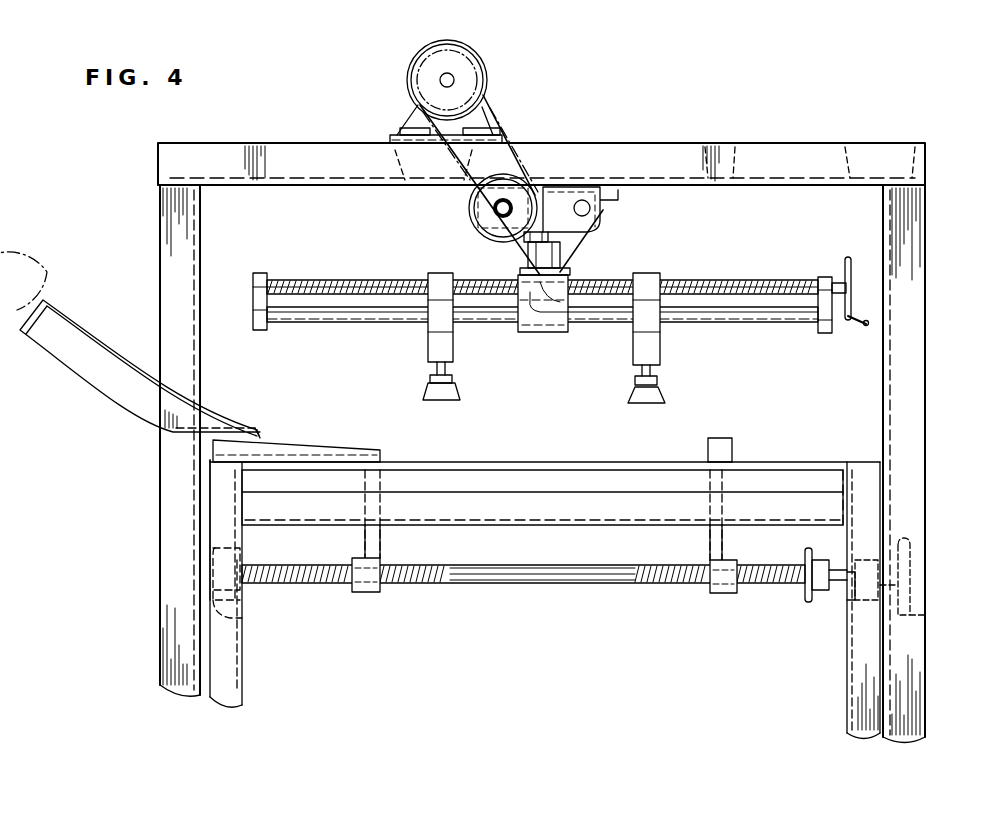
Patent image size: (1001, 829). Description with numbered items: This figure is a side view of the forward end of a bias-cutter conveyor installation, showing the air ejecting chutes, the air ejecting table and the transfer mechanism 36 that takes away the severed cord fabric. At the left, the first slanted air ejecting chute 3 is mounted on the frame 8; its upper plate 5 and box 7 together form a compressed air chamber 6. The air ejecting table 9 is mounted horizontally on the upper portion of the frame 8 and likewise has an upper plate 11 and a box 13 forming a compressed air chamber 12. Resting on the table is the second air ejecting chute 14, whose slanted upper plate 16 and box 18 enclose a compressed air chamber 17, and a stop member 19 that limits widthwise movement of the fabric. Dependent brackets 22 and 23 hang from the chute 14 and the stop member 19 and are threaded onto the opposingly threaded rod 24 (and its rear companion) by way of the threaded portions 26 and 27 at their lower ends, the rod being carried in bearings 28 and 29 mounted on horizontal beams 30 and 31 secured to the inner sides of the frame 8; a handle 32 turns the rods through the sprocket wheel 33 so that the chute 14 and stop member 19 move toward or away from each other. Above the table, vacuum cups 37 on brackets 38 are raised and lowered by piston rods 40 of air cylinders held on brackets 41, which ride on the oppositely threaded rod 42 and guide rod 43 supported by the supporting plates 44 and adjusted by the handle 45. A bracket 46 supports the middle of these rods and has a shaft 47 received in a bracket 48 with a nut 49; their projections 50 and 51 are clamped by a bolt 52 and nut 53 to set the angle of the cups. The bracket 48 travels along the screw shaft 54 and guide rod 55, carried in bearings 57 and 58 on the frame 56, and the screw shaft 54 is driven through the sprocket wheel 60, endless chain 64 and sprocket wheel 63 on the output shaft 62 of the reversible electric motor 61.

The first slanted air ejecting chute 3 is at (92, 392).
The upper plate 5 is at (92, 335).
The compressed air chamber 6 is at (72, 365).
The box 7 is at (28, 340).
The frame 8 is at (235, 684).
The air ejecting table 9 is at (792, 460).
The upper plate 11 is at (836, 462).
The compressed air chamber 12 is at (525, 525).
The box 13 is at (590, 525).
The second air ejecting chute 14 is at (308, 440).
The upper plate 16 is at (375, 448).
The compressed air chamber 17 is at (268, 440).
The box 18 is at (213, 452).
The stop member 19 is at (716, 438).
The dependent bracket 22 is at (380, 548).
The dependent bracket 23 is at (710, 548).
The threaded rod 24 is at (520, 584).
The left traveling nut 26 is at (367, 592).
The right traveling nut 27 is at (722, 593).
The bearings 28 is at (228, 548).
The bearings 29 is at (850, 585).
The horizontal beam 30 is at (240, 612).
The horizontal beam 31 is at (866, 600).
The handle 32 is at (912, 548).
The sprocket wheel 33 is at (806, 562).
The transfer mechanism 36 is at (561, 320).
The vacuum cups 37 is at (646, 403).
The bracket 38 is at (658, 381).
The piston rod 40 is at (633, 375).
The bracket 41 is at (647, 273).
The oppositely threaded rod 42 is at (770, 280).
The guide rod 43 is at (782, 324).
The supporting plates 44 is at (825, 277).
The handle 45 is at (858, 326).
The bracket 46 is at (543, 332).
The shaft 47 is at (560, 258).
The bracket 48 is at (565, 192).
The nut 49 is at (548, 237).
The projection 50 is at (520, 305).
The projection 51 is at (520, 270).
The bolt 52 is at (575, 310).
The nut 53 is at (495, 240).
The screw shaft 54 is at (500, 200).
The guide rod 55 is at (590, 208).
The frame 56 is at (925, 352).
The bearings 57 is at (458, 195).
The bearings 58 is at (618, 195).
The sprocket wheel 60 is at (512, 178).
The reversible electric motor 61 is at (422, 55).
The output shaft 62 is at (440, 80).
The sprocket wheel 63 is at (468, 62).
The endless chain 64 is at (495, 105).